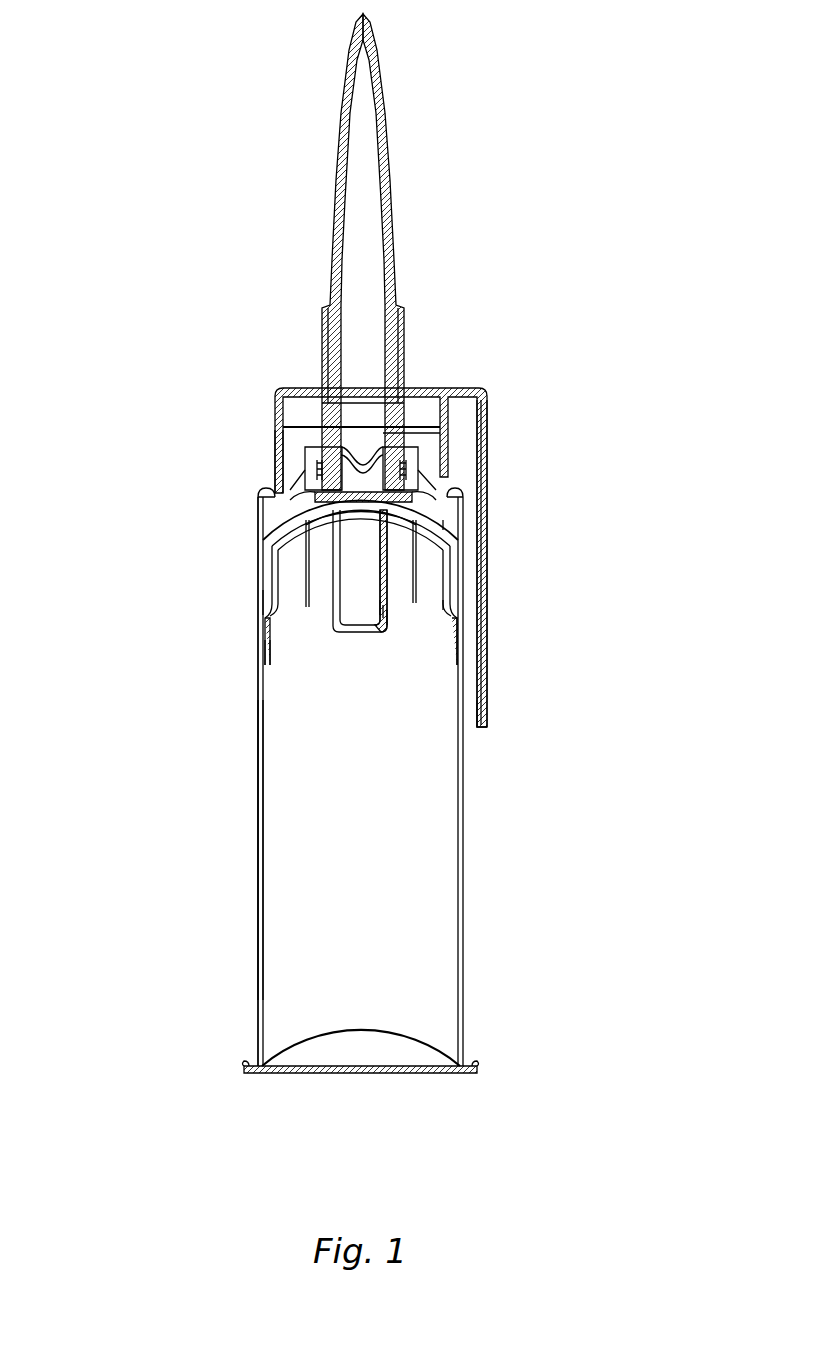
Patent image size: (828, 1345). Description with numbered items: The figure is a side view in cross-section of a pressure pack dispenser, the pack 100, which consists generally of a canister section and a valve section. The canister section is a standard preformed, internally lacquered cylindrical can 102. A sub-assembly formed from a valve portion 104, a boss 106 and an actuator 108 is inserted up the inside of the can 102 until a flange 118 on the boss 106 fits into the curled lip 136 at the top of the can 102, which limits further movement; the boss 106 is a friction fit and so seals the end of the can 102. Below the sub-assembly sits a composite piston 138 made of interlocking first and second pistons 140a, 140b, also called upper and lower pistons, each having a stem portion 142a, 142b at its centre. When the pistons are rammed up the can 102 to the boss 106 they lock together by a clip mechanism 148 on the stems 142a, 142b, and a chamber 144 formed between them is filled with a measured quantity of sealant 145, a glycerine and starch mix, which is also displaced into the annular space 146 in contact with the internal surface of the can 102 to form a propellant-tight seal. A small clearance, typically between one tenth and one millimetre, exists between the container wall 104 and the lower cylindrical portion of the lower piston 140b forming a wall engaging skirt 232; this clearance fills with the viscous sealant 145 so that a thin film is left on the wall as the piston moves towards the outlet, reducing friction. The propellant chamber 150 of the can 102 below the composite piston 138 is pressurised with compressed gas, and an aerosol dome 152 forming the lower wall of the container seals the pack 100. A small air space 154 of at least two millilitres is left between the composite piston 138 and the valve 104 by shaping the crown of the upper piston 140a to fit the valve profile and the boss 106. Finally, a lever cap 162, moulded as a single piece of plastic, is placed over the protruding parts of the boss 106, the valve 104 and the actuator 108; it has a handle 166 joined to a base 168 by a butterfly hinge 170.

The pack 100 is at (212, 562).
The can 102 is at (258, 957).
The valve portion 104 is at (260, 857).
The boss 106 is at (432, 485).
The actuator 108 is at (400, 323).
The flange 118 is at (263, 496).
The curled lip 136 is at (262, 490).
The composite piston 138 is at (362, 614).
The first piston 140a is at (440, 525).
The second piston 140b is at (450, 607).
The stem portion 142a is at (380, 608).
The stem portion 142b is at (383, 610).
The chamber 144 is at (450, 502).
The sealant 145 is at (352, 578).
The annular space 146 is at (263, 602).
The clip mechanism 148 is at (387, 617).
The propellant chamber 150 is at (388, 851).
The aerosol dome 152 is at (362, 1033).
The air space 154 is at (322, 492).
The lever cap 162 is at (483, 393).
The handle 166 is at (487, 562).
The base 168 is at (275, 455).
The butterfly hinge 170 is at (275, 426).
The wall engaging skirt 232 is at (268, 655).